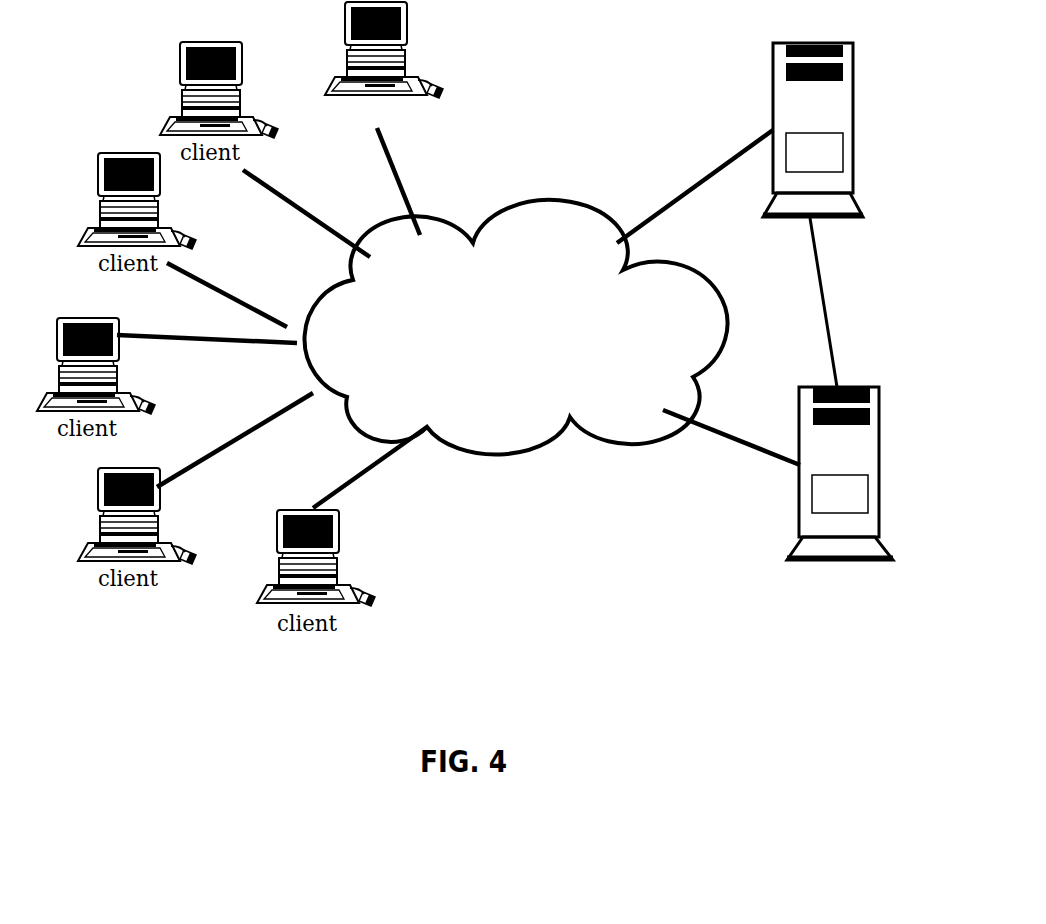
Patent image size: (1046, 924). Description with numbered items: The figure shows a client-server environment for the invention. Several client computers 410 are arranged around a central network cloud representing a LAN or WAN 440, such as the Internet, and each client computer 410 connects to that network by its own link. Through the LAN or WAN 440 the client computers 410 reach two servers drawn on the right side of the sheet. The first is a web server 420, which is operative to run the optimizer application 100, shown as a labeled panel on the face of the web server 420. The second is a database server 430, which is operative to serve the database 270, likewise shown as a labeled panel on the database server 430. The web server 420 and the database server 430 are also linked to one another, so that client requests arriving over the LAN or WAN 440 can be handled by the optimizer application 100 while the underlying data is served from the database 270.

The client computers 410 is at (407, 30).
The web server 420 is at (777, 114).
The database server 430 is at (820, 486).
The LAN or WAN 440 is at (516, 327).
The optimizer application 100 is at (814, 152).
The database 270 is at (840, 494).